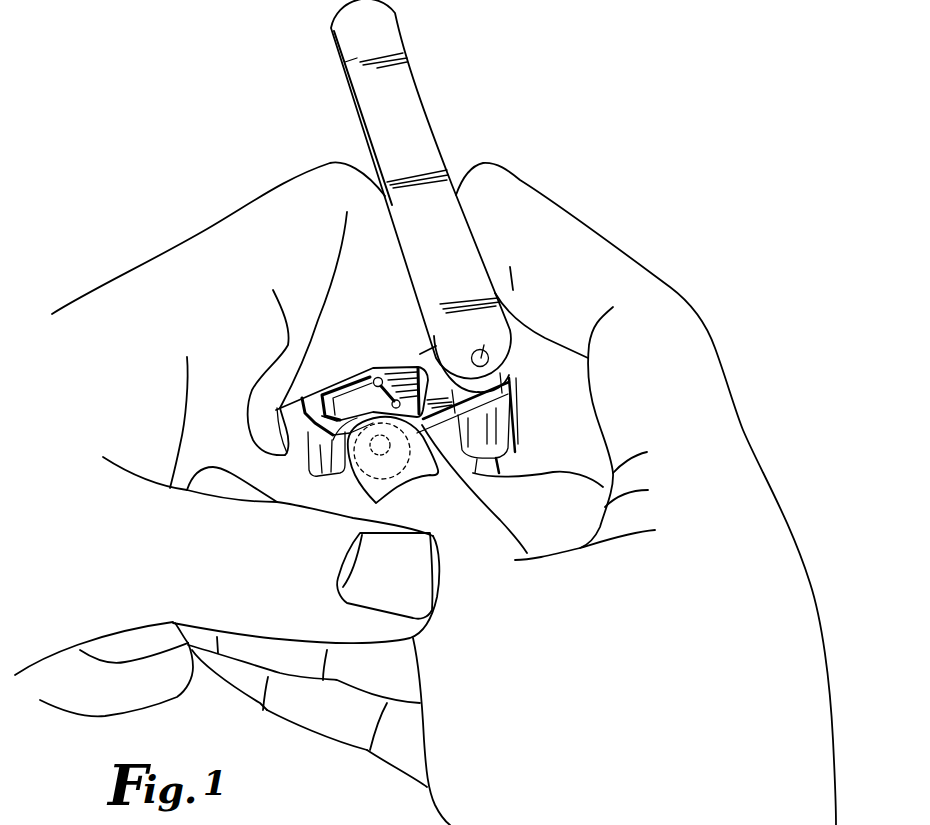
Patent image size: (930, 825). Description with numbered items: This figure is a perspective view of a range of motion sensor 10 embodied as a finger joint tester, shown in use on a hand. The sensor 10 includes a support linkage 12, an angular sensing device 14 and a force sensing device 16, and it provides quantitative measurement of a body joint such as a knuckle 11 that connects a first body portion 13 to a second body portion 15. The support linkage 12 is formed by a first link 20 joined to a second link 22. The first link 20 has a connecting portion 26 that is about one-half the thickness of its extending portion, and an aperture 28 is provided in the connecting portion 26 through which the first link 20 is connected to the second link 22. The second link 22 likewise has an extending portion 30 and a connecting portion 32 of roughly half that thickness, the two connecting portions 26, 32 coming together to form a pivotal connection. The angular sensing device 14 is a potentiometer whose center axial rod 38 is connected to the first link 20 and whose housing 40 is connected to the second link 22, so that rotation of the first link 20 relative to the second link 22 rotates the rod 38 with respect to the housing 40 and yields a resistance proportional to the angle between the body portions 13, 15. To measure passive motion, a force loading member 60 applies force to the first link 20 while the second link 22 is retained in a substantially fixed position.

The range of motion sensor 10 is at (431, 246).
The body joint 11 is at (348, 350).
The support linkage 12 is at (526, 377).
The first body portion 13 is at (248, 392).
The angular sensing device 14 is at (521, 412).
The second body portion 15 is at (404, 250).
The force sensing device 16 is at (366, 368).
The first link 20 is at (347, 367).
The second link 22 is at (402, 40).
The connecting portion 26 is at (443, 388).
The aperture 28 is at (489, 357).
The extending portion 30 is at (458, 196).
The connecting portion 32 is at (511, 343).
The center axial rod 38 is at (484, 345).
The housing 40 is at (510, 442).
The force loading member 60 is at (337, 477).